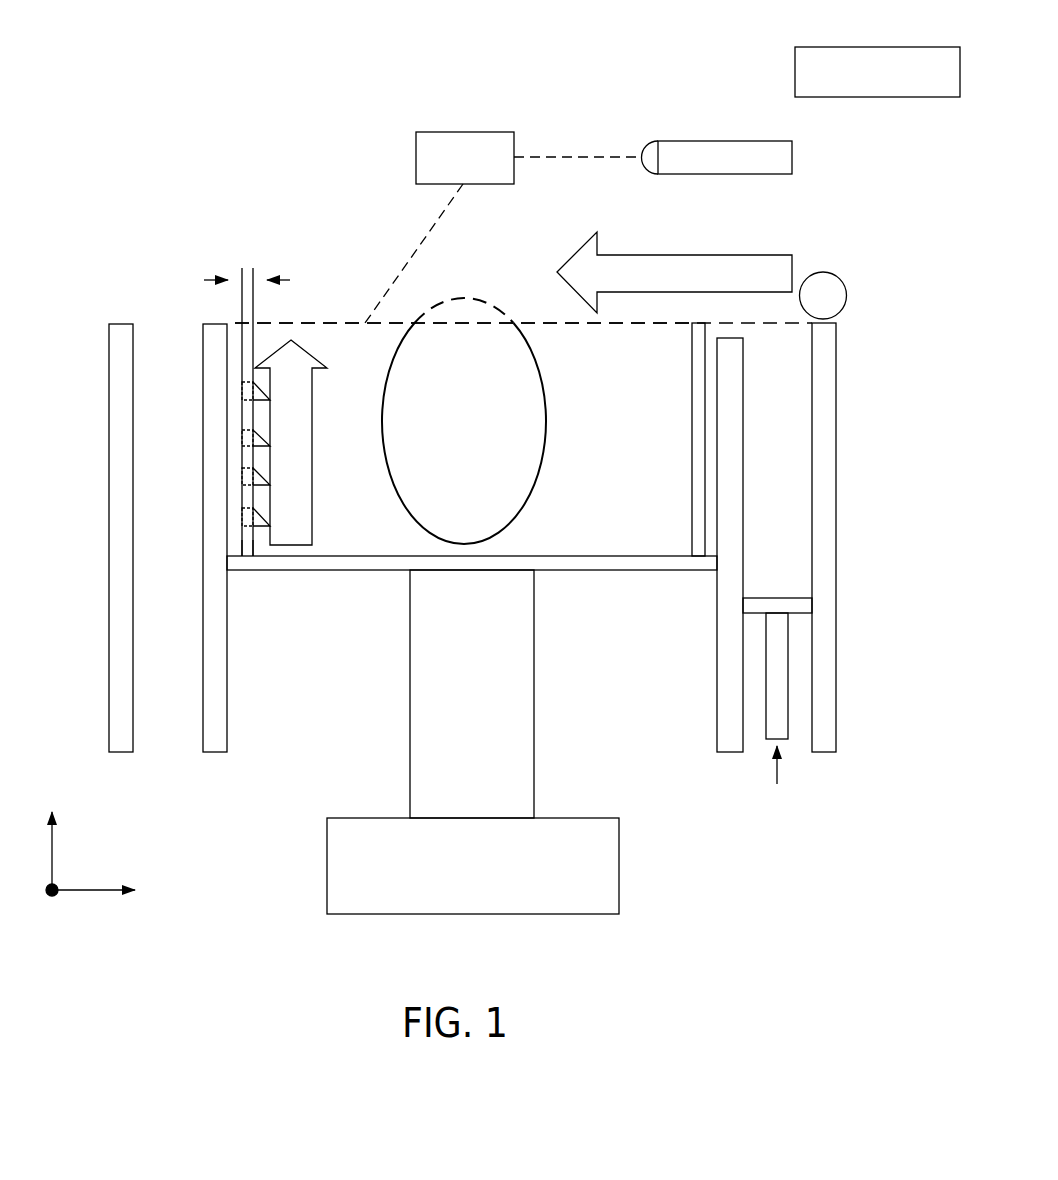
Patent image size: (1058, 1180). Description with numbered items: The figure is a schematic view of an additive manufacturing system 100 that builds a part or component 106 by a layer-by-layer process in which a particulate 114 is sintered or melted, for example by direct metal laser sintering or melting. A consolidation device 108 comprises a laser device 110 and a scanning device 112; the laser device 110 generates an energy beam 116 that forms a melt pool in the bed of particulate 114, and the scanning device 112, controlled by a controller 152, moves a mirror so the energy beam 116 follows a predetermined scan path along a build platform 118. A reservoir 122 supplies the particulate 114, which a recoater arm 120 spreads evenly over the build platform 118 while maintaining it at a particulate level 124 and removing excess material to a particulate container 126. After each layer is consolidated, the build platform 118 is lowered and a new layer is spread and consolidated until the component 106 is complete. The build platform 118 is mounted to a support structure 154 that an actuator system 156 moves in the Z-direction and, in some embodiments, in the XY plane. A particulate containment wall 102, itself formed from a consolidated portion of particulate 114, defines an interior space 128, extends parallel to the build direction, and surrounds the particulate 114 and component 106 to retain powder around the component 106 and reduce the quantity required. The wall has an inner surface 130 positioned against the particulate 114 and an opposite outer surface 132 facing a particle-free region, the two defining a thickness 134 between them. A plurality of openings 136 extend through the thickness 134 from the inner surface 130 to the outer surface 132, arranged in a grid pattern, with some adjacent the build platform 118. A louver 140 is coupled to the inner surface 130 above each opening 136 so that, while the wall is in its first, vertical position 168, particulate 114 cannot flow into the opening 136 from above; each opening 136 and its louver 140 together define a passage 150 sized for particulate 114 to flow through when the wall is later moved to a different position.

The additive manufacturing system 100 is at (235, 75).
The particulate containment wall 102 is at (247, 353).
The component 106 is at (548, 422).
The consolidation device 108 is at (550, 115).
The laser device 110 is at (725, 141).
The scanning device 112 is at (465, 132).
The particulate 114 is at (546, 338).
The energy beam 116 is at (430, 228).
The build platform 118 is at (605, 555).
The recoater arm 120 is at (823, 272).
The reservoir 122 is at (790, 465).
The particulate level 124 is at (340, 322).
The particulate container 126 is at (185, 663).
The interior space 128 is at (340, 357).
The inner surface 130 is at (252, 497).
The outer surface 132 is at (240, 420).
The thickness 134 is at (245, 268).
The opening 136 is at (237, 498).
The louver 140 is at (262, 548).
The passage 150 is at (248, 393).
The controller 152 is at (877, 97).
The support structure 154 is at (522, 695).
The actuator system 156 is at (607, 868).
The first, vertical position 168 is at (217, 315).